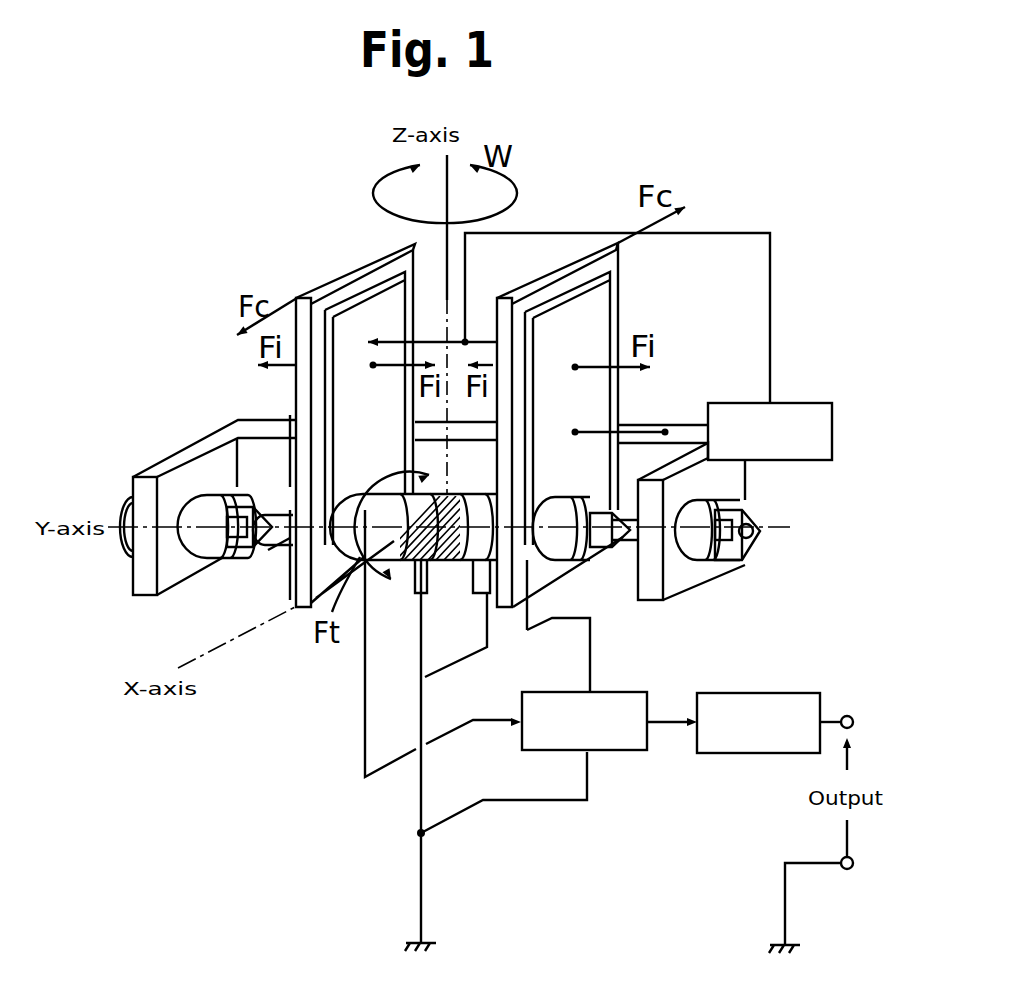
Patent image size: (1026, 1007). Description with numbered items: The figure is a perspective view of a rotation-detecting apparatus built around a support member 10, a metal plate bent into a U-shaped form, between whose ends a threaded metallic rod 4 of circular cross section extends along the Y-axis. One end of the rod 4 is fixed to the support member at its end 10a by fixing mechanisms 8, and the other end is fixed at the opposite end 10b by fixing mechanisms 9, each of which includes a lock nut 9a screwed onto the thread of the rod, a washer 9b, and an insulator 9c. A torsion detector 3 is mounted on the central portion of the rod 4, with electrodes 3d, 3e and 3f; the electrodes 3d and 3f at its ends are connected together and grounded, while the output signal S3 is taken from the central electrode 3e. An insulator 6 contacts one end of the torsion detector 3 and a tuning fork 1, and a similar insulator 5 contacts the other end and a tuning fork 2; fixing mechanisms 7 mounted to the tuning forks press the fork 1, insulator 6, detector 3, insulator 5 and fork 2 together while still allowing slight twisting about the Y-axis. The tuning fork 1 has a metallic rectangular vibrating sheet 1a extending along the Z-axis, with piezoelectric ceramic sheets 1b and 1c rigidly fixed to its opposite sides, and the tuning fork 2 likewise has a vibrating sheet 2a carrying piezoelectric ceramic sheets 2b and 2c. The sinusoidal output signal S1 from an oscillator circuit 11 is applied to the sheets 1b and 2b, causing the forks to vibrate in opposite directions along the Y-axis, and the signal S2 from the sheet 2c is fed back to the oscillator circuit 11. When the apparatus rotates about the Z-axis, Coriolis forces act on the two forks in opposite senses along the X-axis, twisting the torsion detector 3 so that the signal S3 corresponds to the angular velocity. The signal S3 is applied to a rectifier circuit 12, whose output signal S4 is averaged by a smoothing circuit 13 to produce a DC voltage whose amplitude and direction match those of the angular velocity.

The tuning fork 1 is at (313, 403).
The vibrating sheet 1a is at (317, 290).
The piezoelectric ceramic sheet 1b is at (380, 298).
The piezoelectric ceramic sheet 1c is at (292, 388).
The tuning fork 2 is at (586, 398).
The vibrating sheet 2a is at (558, 268).
The piezoelectric ceramic sheet 2b is at (497, 315).
The piezoelectric ceramic sheet 2c is at (600, 318).
The torsion detector 3 is at (361, 539).
The electrode 3d is at (423, 587).
The electrode 3e is at (420, 458).
The electrode 3f is at (486, 600).
The rod 4 is at (281, 535).
The insulator 5 is at (483, 507).
The insulator 6 is at (230, 455).
The fixing mechanism 7 is at (607, 566).
The fixing mechanism 8 is at (225, 562).
The fixing mechanism 9 is at (751, 555).
The lock nut 9a is at (723, 553).
The washer 9b is at (745, 500).
The insulator 9c is at (695, 557).
The support member 10 is at (153, 526).
The end of support member 10a is at (172, 578).
The end of support member 10b is at (650, 593).
The oscillator circuit 11 is at (817, 403).
The rectifier circuit 12 is at (630, 752).
The smoothing circuit 13 is at (750, 755).
The output signal S1 is at (773, 268).
The output signal S2 is at (643, 423).
The output signal S3 is at (488, 718).
The output signal S4 is at (668, 725).